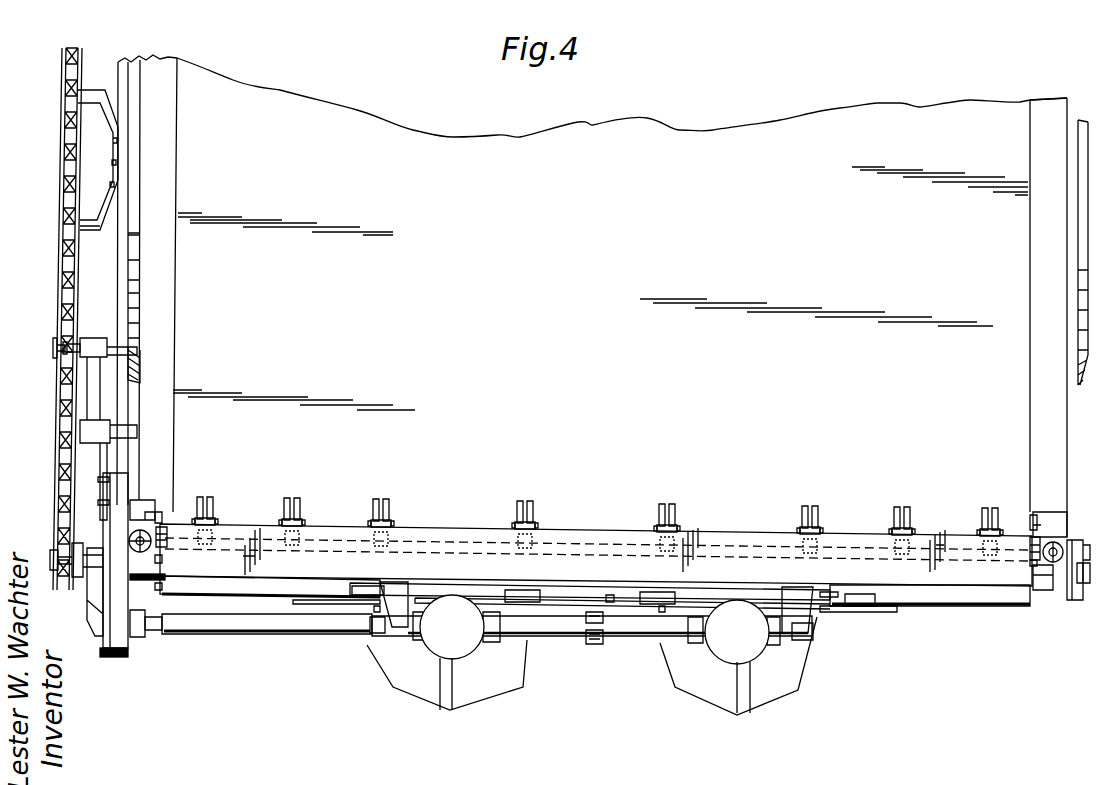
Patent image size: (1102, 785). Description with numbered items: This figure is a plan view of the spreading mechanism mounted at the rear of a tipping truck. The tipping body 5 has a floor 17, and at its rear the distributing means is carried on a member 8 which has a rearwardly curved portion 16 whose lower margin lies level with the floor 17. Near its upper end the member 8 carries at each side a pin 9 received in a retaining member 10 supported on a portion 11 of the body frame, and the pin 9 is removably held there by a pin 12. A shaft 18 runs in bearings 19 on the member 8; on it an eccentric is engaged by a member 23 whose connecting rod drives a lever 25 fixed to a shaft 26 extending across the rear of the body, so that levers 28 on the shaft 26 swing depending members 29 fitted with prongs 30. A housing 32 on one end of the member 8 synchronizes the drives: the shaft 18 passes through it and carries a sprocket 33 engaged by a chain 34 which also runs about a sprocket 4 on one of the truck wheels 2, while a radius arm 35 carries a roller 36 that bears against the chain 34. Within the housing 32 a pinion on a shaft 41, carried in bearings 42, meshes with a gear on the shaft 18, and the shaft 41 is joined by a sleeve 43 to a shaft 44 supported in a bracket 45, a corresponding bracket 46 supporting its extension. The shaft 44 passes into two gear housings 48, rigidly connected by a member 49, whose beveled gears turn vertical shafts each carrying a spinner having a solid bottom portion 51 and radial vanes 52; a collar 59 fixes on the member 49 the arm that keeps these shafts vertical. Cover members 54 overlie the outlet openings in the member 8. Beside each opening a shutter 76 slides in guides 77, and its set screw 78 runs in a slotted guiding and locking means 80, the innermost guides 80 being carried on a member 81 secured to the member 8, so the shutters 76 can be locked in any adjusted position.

The wheel 2 is at (120, 62).
The sprocket 4 is at (68, 142).
The body 5 is at (168, 68).
The member 8 is at (985, 585).
The pin 9 is at (168, 528).
The retaining member 10 is at (145, 498).
The body frame portion 11 is at (160, 512).
The pin 12 is at (158, 566).
The curved portion 16 is at (232, 596).
The floor 17 is at (668, 142).
The shaft 18 is at (100, 588).
The bearing 19 is at (156, 575).
The eccentric-engaging member 23 is at (1076, 600).
The lever 25 is at (1080, 560).
The shaft 26 is at (712, 548).
The lever 28 is at (282, 522).
The depending member 29 is at (218, 519).
The prong 30 is at (208, 496).
The housing 32 is at (118, 658).
The sprocket 33 is at (78, 545).
The chain 34 is at (60, 306).
The radius arm 35 is at (98, 392).
The roller 36 is at (52, 347).
The shaft 41 is at (153, 634).
The bearing 42 is at (138, 640).
The sleeve 43 is at (262, 636).
The shaft 44 is at (390, 614).
The bracket 45 is at (380, 635).
The bracket 46 is at (808, 640).
The gear housing 48 is at (438, 650).
The connecting member 49 is at (560, 640).
The bottom portion 51 is at (490, 690).
The vane 52 is at (458, 706).
The cover member 54 is at (482, 592).
The collar 59 is at (594, 646).
The shutter 76 is at (372, 588).
The guide 77 is at (430, 596).
The set screw 78 is at (374, 612).
The guiding and locking means 80 is at (322, 604).
The member 81 is at (608, 594).